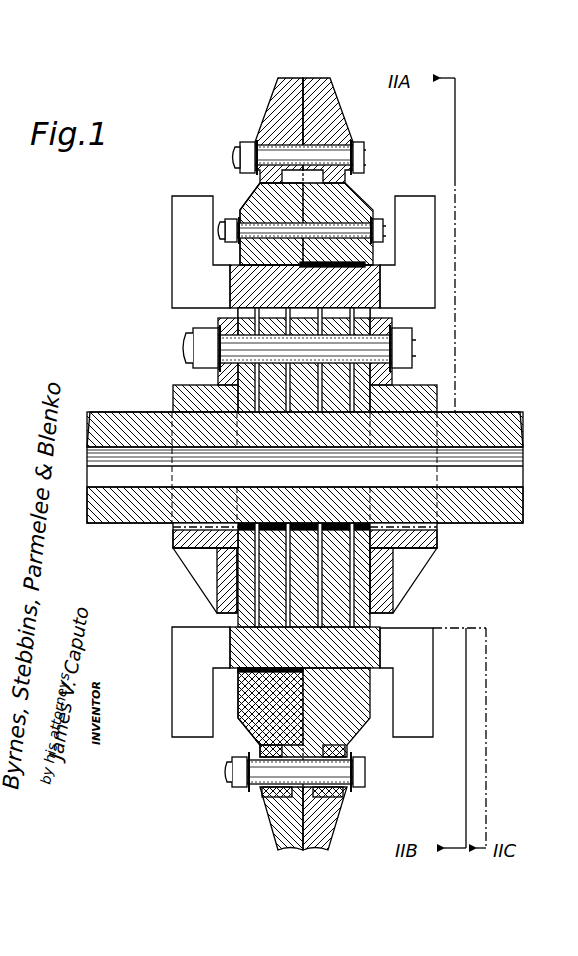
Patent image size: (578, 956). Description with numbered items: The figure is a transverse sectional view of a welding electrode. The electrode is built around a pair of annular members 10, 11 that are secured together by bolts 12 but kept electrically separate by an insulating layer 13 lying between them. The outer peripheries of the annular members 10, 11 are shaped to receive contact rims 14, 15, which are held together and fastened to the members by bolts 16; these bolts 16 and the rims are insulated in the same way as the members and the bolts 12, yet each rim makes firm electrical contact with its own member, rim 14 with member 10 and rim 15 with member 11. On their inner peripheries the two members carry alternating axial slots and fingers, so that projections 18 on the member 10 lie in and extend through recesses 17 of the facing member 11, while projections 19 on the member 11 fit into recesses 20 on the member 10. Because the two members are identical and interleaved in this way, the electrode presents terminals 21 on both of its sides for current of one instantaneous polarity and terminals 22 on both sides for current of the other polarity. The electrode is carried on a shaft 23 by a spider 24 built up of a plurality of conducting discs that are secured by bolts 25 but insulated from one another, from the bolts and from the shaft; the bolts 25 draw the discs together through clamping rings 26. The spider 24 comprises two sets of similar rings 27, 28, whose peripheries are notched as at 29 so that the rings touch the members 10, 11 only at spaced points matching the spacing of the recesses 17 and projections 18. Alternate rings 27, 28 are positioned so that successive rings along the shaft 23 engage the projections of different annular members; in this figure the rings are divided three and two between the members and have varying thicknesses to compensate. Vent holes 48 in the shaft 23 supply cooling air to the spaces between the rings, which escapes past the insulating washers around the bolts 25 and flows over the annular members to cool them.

The annular member 10 is at (262, 190).
The annular member 11 is at (335, 205).
The bolts 12 is at (217, 230).
The insulating layer 13 is at (293, 213).
The contact rim 14 is at (277, 107).
The contact rim 15 is at (327, 110).
The bolts 16 is at (335, 157).
The recesses 17 is at (380, 283).
The projections 18 is at (350, 262).
The projections 19 is at (233, 642).
The recesses 20 is at (245, 690).
The terminals 21 is at (183, 267).
The terminals 22 is at (183, 705).
The shaft 23 is at (130, 422).
The spider 24 is at (337, 582).
The bolts 25 is at (182, 348).
The clamping rings 26 is at (417, 396).
The rings 27 is at (217, 574).
The rings 28 is at (214, 597).
The notches 29 is at (330, 313).
The vent holes 48 is at (280, 428).